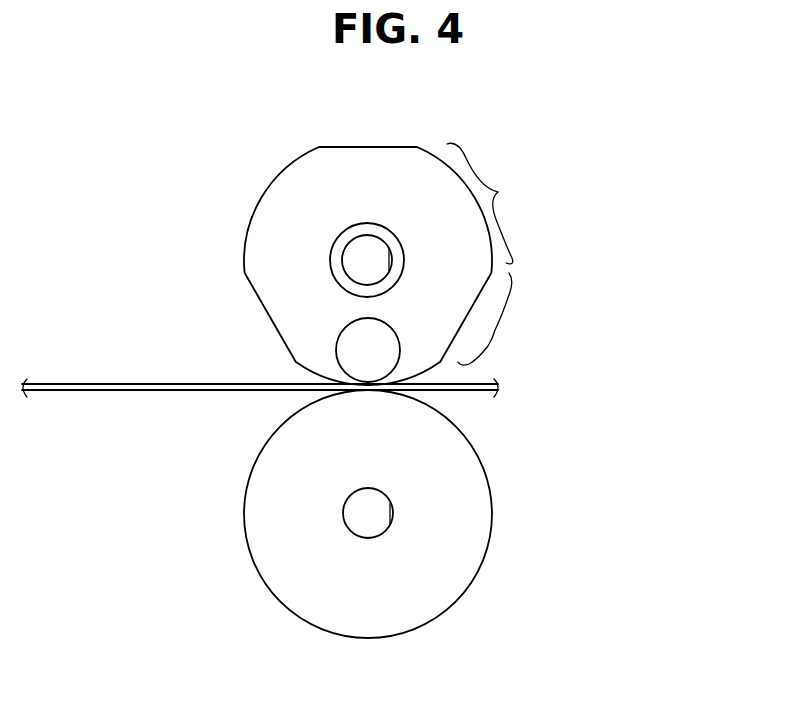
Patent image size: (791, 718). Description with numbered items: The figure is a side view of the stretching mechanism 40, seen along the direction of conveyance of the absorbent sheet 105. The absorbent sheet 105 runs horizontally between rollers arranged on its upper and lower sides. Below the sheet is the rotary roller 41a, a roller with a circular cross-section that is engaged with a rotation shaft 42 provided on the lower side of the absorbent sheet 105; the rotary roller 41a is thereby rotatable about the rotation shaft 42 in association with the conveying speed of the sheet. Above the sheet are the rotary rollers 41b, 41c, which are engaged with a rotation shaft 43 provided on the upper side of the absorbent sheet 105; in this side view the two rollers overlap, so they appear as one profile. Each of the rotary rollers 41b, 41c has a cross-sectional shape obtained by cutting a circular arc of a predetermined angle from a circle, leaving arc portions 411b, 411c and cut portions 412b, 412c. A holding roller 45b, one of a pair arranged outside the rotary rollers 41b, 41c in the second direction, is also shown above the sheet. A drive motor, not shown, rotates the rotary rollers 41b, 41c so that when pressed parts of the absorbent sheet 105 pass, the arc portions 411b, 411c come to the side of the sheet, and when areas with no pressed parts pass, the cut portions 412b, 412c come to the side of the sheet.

The stretching mechanism 40 is at (590, 150).
The rotary roller 41c is at (363, 235).
The rotary roller 41b is at (308, 183).
The rotation shaft 43 is at (347, 258).
The holding roller 45b is at (337, 347).
The arc portion 411c is at (546, 203).
The arc portion 411b is at (480, 203).
The cut portion 412c is at (555, 319).
The cut portion 412b is at (485, 319).
The rotary roller 41a is at (442, 593).
The rotation shaft 42 is at (382, 488).
The absorbent sheet 105 is at (95, 392).